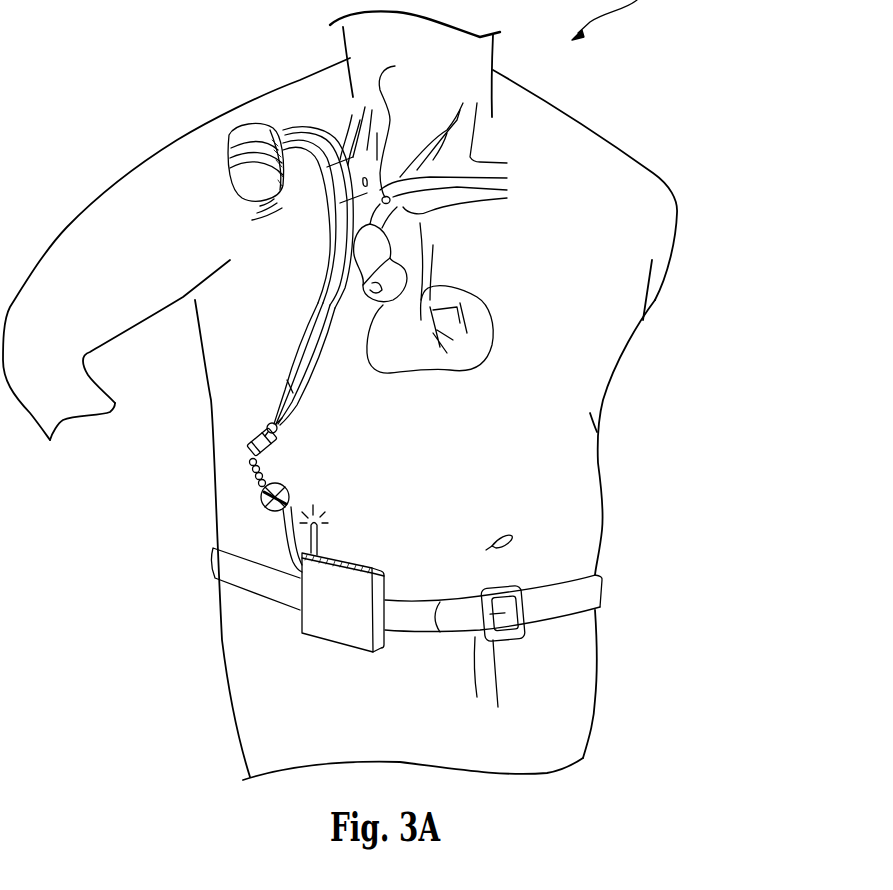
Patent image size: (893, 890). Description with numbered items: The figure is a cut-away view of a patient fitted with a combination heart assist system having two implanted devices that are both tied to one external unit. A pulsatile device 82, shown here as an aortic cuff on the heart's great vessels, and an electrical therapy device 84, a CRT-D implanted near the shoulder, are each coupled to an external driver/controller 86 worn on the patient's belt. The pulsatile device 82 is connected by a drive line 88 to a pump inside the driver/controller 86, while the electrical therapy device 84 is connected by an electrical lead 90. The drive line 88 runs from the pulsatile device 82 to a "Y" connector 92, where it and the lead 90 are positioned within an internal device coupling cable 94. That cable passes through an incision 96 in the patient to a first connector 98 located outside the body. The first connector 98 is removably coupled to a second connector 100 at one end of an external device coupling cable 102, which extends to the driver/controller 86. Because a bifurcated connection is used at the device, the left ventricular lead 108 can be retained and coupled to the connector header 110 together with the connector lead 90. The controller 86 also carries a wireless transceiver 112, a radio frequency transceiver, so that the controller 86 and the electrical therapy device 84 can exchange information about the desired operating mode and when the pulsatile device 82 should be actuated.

The pulsatile device 82 is at (412, 247).
The electrical therapy device 84 is at (245, 188).
The driver/controller 86 is at (315, 628).
The drive line 88 is at (320, 297).
The electrical lead 90 is at (328, 212).
The "Y" connector 92 is at (275, 420).
The internal device coupling cable 94 is at (252, 462).
The incision 96 is at (250, 480).
The first connector 98 is at (261, 497).
The second connector 100 is at (282, 508).
The external device coupling cable 102 is at (295, 527).
The left ventricular lead 108 is at (525, 298).
The connector header 110 is at (245, 133).
The wireless transceiver 112 is at (320, 523).